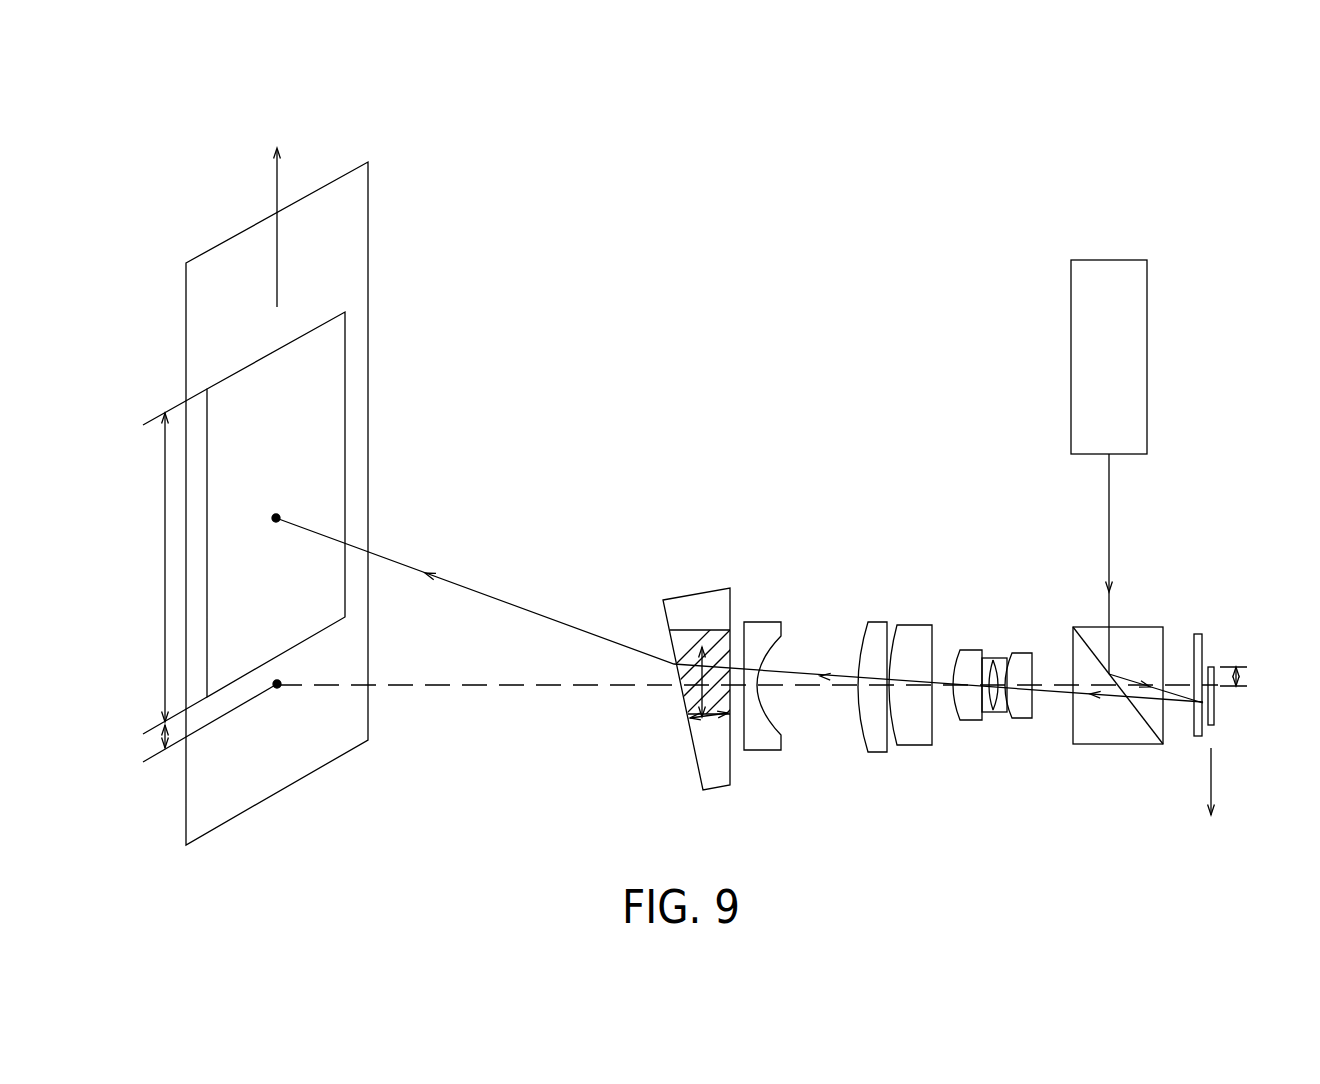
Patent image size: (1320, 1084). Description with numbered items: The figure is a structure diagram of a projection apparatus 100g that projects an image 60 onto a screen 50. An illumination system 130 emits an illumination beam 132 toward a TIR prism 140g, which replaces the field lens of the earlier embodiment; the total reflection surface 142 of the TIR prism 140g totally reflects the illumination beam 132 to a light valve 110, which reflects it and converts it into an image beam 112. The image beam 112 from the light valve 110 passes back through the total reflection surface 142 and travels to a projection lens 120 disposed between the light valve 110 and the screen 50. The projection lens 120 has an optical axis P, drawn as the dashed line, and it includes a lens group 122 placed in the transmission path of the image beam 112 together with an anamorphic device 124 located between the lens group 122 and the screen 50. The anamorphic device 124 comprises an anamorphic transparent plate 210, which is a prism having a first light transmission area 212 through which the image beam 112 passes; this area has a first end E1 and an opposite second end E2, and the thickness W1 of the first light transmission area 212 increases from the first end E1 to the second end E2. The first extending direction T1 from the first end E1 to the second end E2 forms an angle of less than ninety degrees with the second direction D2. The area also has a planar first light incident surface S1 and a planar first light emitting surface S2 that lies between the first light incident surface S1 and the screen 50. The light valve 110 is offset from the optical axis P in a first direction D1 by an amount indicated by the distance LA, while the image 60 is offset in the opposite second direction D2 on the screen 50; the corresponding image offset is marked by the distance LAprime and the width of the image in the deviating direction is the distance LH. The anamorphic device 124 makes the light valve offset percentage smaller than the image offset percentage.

The screen 50 is at (216, 273).
The image 60 is at (331, 345).
The second direction D2 is at (277, 178).
The distance L_H (width of the light valve or image) LH is at (169, 561).
The distance L_A (offset A) LAprime is at (192, 730).
The optical axis P is at (512, 688).
The anamorphic transparent plate 210 is at (700, 598).
The first light transmission area 212 is at (674, 628).
The thickness W1 is at (692, 726).
The first extending direction T1 is at (680, 630).
The second end E2 is at (705, 628).
The first light incident surface S1 is at (733, 657).
The first light emitting surface S2 is at (688, 712).
The first end E1 is at (718, 742).
The anamorphic device 124 is at (742, 794).
The lens group 122 is at (1033, 770).
The projection lens 120 is at (912, 840).
The illumination system 130 is at (1109, 260).
The illumination beam 132 is at (1109, 511).
The TIR prism 140g is at (1150, 627).
The total reflection surface 142 is at (1090, 650).
The image beam 112 is at (1062, 692).
The light valve 110 is at (1215, 712).
The first direction D1 is at (1225, 781).
The distance L_A LA is at (1247, 676).
The projection apparatus 100g is at (1137, 866).